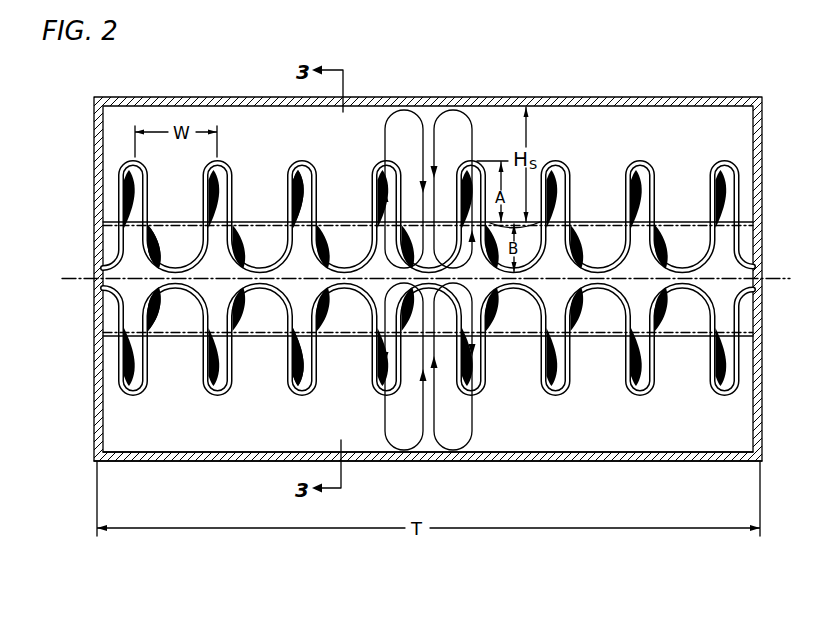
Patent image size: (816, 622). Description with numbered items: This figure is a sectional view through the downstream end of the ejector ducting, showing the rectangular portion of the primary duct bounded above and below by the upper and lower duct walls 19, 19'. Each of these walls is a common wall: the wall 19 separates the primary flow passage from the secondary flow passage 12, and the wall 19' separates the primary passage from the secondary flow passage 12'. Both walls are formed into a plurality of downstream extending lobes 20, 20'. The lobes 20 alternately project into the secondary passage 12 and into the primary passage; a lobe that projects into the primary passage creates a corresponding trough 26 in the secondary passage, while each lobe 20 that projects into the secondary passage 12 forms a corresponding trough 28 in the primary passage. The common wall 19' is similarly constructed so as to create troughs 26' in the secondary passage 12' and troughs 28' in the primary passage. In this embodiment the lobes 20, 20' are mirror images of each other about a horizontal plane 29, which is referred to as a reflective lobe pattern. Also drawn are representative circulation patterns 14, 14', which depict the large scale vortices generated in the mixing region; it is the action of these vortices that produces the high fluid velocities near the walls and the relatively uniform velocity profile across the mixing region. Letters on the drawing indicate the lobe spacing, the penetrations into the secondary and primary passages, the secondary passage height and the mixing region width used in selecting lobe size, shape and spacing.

The secondary flow passage 12 is at (428, 266).
The secondary flow passage 12' is at (428, 468).
The circulation pattern 14 is at (444, 189).
The circulation pattern 14' is at (415, 366).
The upper duct wall 19 is at (428, 202).
The lower duct wall 19' is at (428, 358).
The lobes 20 is at (428, 201).
The lobes 20' is at (428, 363).
The trough 26 is at (188, 248).
The trough 26' is at (191, 308).
The trough 28 is at (322, 190).
The trough 28' is at (323, 364).
The horizontal plane 29 is at (86, 278).